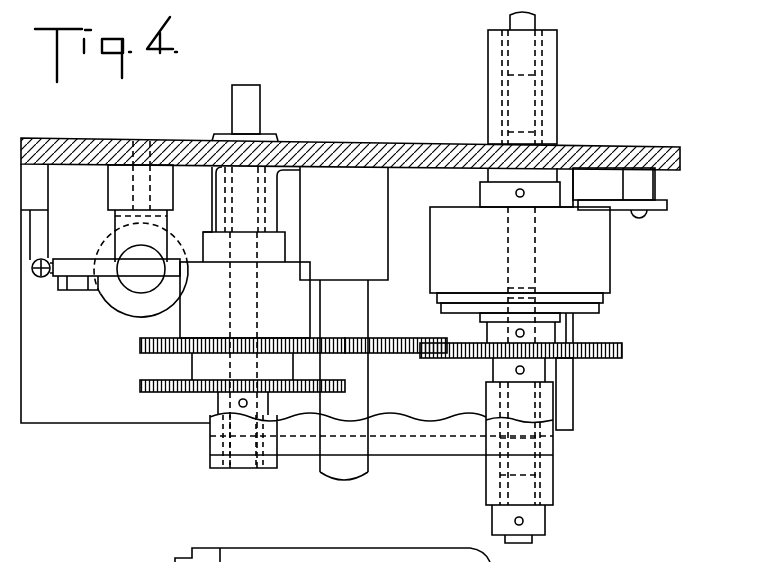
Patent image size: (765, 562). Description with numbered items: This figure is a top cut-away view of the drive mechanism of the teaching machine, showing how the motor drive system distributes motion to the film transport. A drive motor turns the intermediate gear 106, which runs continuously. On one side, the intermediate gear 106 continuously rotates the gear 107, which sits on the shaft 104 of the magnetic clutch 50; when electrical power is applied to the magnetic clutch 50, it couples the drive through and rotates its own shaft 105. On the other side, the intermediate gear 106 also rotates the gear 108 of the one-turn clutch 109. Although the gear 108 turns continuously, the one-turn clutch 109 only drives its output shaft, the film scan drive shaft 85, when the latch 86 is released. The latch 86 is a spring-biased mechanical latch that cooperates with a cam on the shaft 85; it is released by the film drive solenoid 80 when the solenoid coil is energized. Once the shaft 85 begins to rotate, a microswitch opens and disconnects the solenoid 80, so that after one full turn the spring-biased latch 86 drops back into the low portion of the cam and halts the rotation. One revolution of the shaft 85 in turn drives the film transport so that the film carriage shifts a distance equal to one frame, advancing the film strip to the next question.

The magnetic clutch 50 is at (585, 267).
The film drive solenoid 80 is at (116, 295).
The film scan drive shaft 85 is at (247, 103).
The latch 86 is at (172, 267).
The shaft 104 is at (527, 541).
The shaft 105 is at (528, 23).
The intermediate gear 106 is at (405, 324).
The gear 107 is at (603, 360).
The gear 108 is at (140, 347).
The one-turn clutch 109 is at (278, 296).